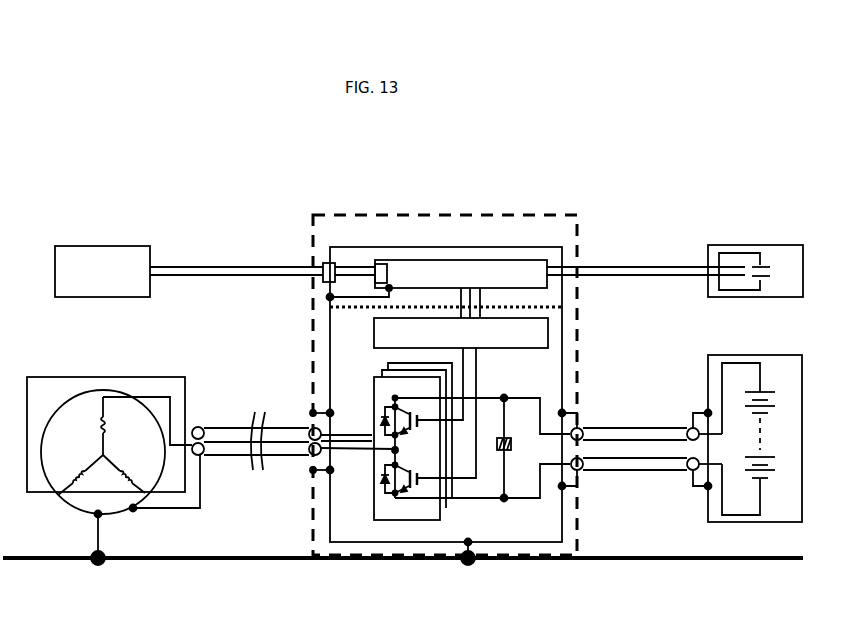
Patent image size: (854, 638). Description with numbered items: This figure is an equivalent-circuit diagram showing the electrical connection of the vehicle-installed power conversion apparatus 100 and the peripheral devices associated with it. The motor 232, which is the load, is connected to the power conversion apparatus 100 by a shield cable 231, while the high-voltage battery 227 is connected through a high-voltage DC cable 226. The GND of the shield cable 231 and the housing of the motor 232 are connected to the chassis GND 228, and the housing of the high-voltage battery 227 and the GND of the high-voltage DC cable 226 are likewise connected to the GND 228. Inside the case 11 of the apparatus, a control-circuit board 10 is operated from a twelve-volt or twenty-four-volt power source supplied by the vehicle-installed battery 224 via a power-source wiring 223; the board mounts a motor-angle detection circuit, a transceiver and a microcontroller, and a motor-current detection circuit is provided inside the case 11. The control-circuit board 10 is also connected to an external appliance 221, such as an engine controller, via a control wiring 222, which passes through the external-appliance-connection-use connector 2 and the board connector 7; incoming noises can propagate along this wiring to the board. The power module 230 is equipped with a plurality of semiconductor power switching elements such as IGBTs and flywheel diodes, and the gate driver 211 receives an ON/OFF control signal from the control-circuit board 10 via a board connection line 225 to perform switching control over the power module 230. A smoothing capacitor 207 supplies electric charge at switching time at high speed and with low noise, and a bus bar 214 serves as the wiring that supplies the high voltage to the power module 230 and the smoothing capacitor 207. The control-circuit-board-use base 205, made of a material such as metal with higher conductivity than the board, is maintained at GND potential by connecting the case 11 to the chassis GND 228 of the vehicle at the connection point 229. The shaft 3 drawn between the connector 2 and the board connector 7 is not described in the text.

The power conversion apparatus 100 is at (430, 213).
The external-appliance-connection-use connector 2 is at (327, 262).
The shaft 3 is at (347, 262).
The board connector 7 is at (385, 264).
The control-circuit board 10 is at (483, 270).
The case 11 is at (532, 247).
The control-circuit-board-use base 205 is at (562, 313).
The smoothing capacitor 207 is at (512, 440).
The gate driver 211 is at (540, 340).
The bus bar 214 is at (488, 398).
The external appliance 221 is at (115, 262).
The control wiring 222 is at (196, 267).
The power-source wiring 223 is at (625, 267).
The vehicle-installed battery 224 is at (765, 272).
The board connection line 225 is at (484, 299).
The high-voltage DC cable 226 is at (608, 465).
The high-voltage battery 227 is at (763, 383).
The chassis GND 228 is at (577, 556).
The connection point 229 is at (474, 562).
The power module 230 is at (376, 385).
The shield cable 231 is at (215, 428).
The motor 232 is at (88, 403).